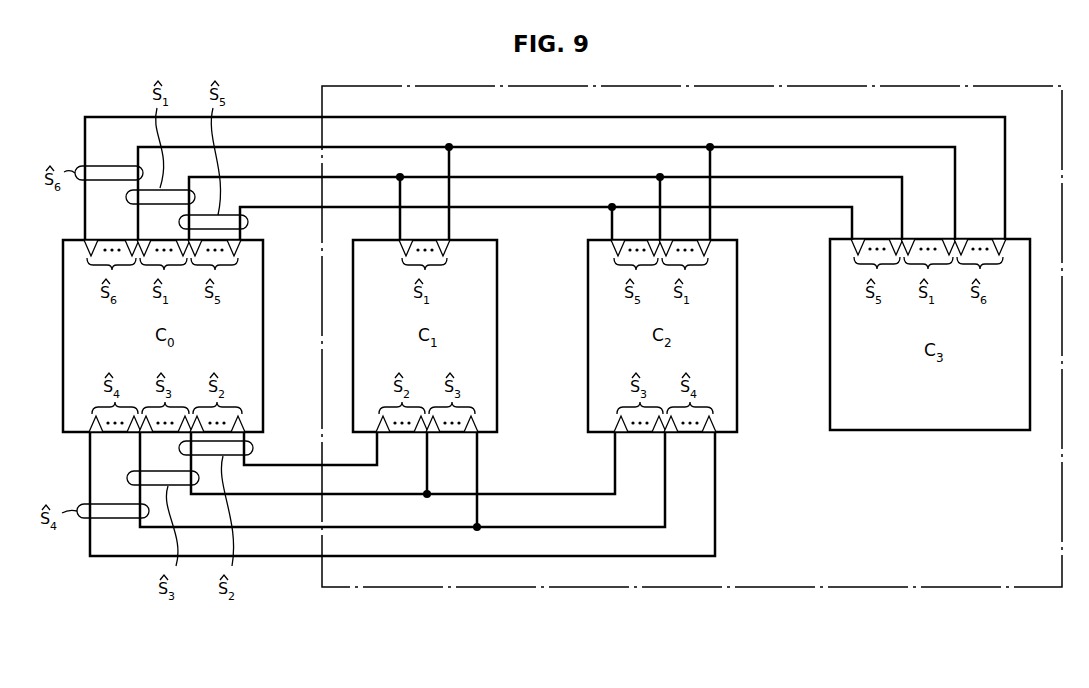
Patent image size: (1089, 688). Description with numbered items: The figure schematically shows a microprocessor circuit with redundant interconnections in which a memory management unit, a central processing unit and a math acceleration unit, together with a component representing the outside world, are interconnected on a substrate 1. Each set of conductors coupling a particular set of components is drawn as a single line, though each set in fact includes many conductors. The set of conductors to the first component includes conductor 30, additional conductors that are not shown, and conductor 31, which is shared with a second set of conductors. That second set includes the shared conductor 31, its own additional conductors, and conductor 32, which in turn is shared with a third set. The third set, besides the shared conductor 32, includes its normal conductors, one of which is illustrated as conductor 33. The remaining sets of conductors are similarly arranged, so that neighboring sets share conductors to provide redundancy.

The substrate 1 is at (351, 86).
The conductor 30 is at (503, 116).
The shared conductor 31 is at (518, 145).
The shared conductor 32 is at (530, 174).
The conductor 33 is at (547, 204).